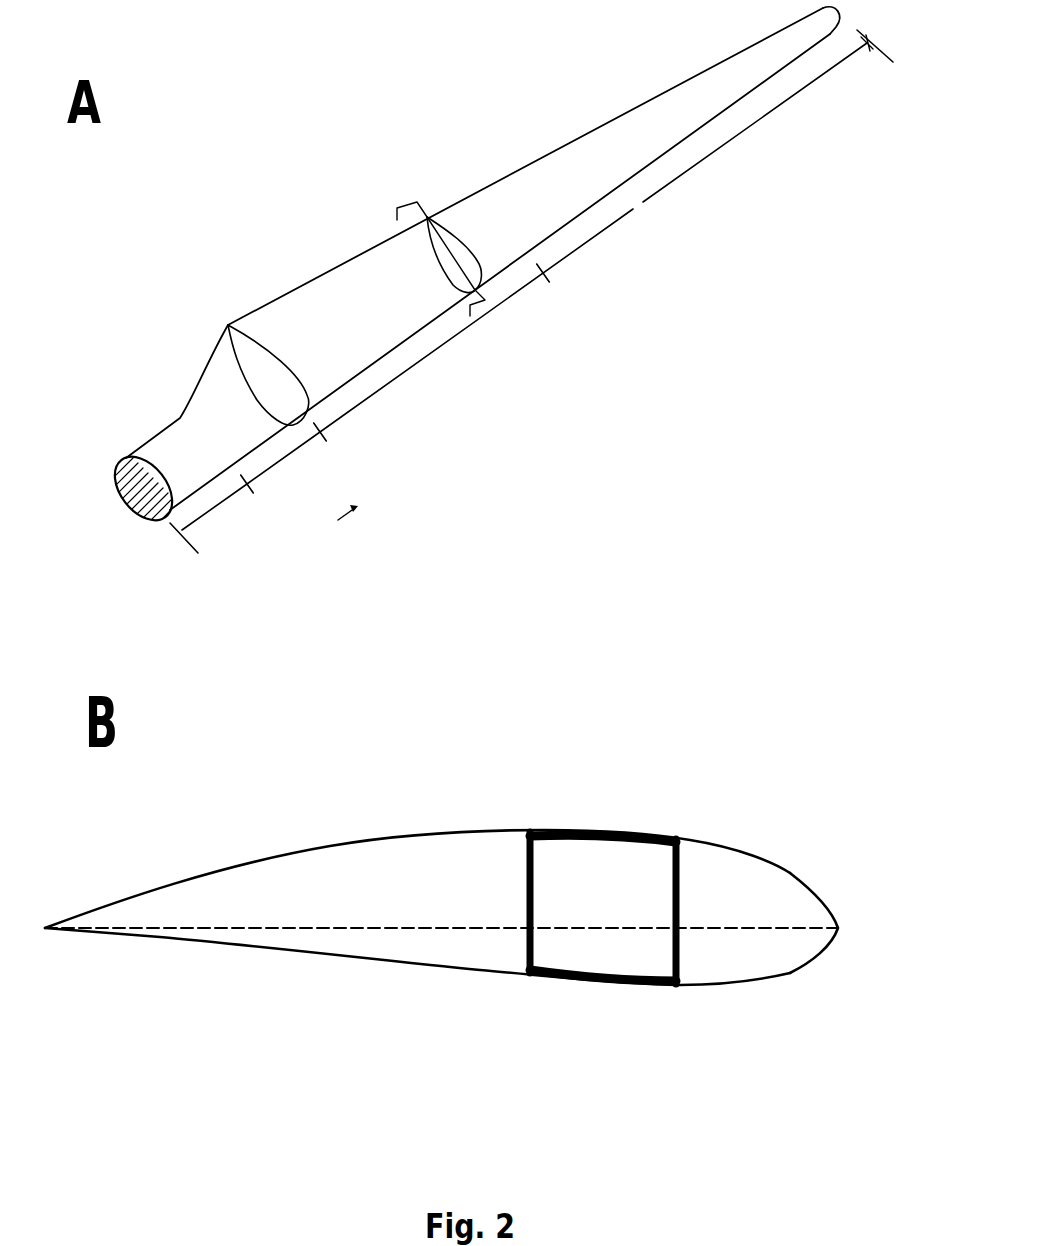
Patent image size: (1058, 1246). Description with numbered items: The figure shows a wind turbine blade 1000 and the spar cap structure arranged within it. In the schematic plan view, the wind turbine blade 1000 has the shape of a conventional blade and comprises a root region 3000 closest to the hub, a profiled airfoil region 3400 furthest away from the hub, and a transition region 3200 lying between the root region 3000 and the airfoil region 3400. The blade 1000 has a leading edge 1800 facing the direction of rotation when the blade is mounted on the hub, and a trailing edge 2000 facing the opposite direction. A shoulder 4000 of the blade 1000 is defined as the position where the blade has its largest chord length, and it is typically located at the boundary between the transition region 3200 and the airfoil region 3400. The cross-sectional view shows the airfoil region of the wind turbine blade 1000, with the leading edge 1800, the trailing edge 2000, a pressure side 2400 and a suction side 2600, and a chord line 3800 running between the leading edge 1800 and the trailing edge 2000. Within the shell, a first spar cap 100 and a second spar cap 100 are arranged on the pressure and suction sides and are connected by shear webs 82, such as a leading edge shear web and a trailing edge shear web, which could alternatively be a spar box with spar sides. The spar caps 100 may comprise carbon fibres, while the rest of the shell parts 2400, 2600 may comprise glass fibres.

In FIG. 2A, the wind turbine blade 1000 is at (477, 295).
In FIG. 2B, the wind turbine blade 1000 is at (472, 859).
In FIG. 2A, the leading edge 1800 is at (620, 186).
In FIG. 2B, the leading edge 1800 is at (840, 926).
In FIG. 2A, the trailing edge 2000 is at (540, 155).
In FIG. 2B, the pressure side 2400 is at (687, 988).
In FIG. 2B, the suction side 2600 is at (705, 838).
In FIG. 2A, the root region 3000 is at (213, 507).
In FIG. 2A, the transition region 3200 is at (282, 462).
In FIG. 2A, the airfoil region 3400 is at (543, 276).
In FIG. 2A, the chord line 3800 is at (118, 463).
In FIG. 2B, the chord line 3800 is at (440, 930).
In FIG. 2A, the shoulder 4000 is at (228, 325).
In FIG. 2B, the shear webs 82 is at (530, 952).
In FIG. 2B, the spar cap 100 is at (613, 830).